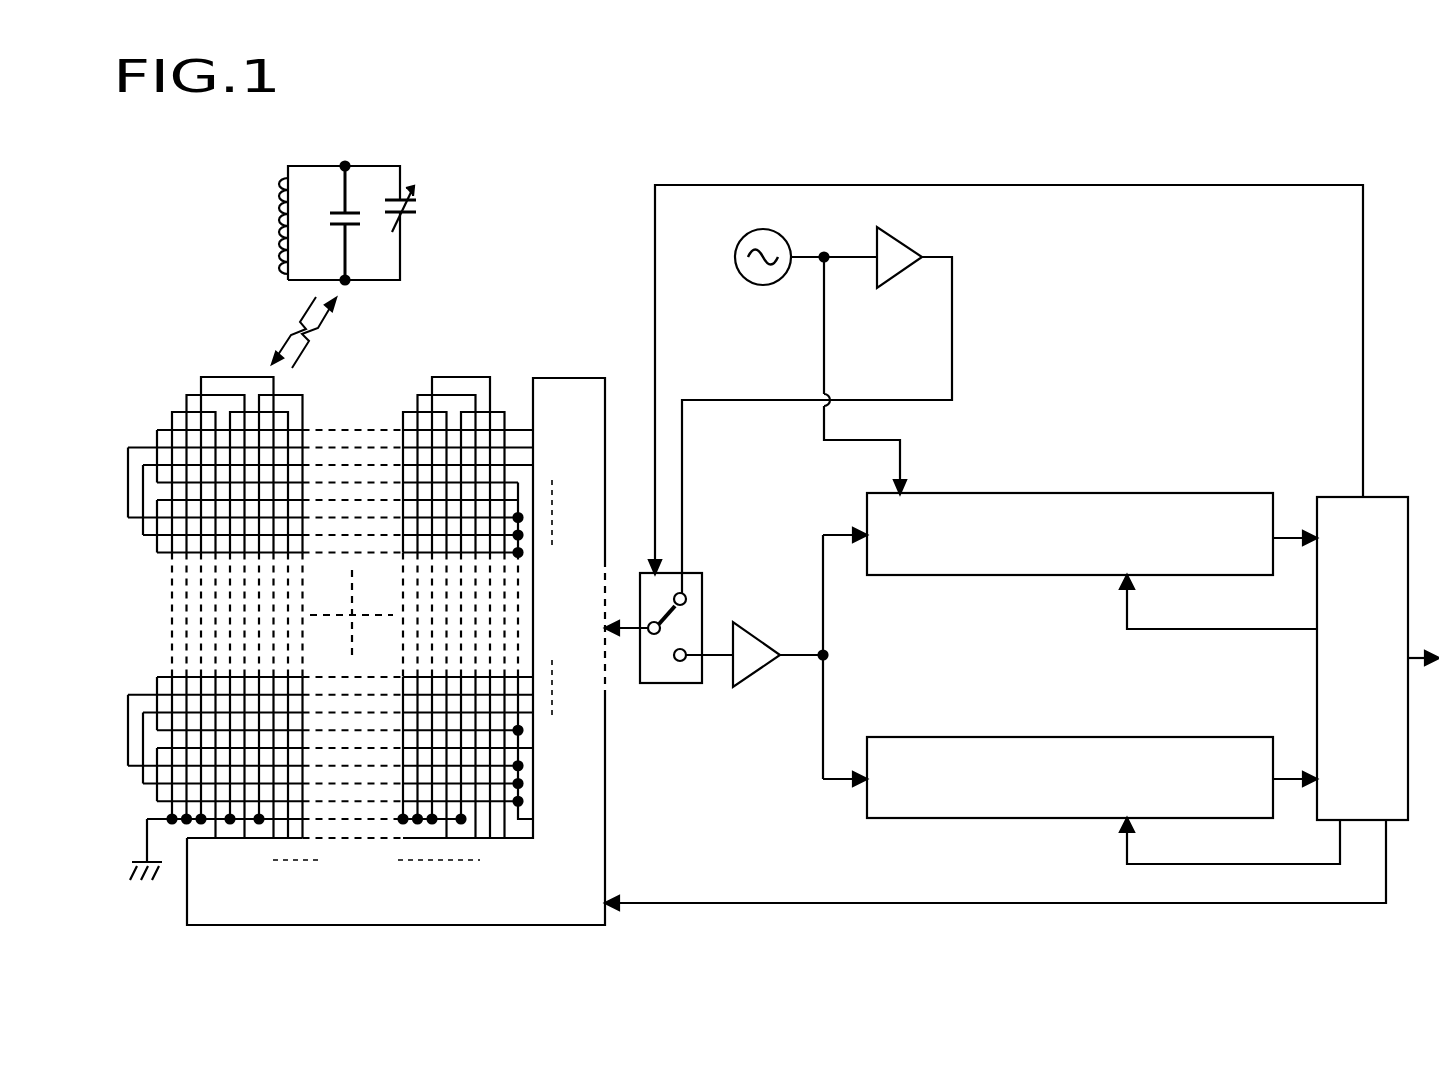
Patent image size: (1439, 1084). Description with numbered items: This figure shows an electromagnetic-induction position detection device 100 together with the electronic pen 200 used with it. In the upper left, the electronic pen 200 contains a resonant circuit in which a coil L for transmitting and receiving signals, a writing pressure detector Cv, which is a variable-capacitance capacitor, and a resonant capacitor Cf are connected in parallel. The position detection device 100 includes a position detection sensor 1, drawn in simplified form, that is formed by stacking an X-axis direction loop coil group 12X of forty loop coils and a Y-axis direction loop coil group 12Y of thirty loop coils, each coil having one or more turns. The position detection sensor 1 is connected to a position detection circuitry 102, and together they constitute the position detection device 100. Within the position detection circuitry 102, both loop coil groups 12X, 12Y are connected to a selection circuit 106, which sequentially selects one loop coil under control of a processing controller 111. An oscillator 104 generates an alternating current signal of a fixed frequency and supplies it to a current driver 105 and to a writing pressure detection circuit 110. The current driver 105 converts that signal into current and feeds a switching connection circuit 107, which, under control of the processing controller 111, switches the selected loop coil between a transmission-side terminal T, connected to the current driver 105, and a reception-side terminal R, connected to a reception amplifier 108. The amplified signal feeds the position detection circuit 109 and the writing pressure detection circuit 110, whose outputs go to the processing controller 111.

The electronic pen 200 is at (203, 170).
The coil L is at (282, 218).
The resonant capacitor Cf is at (332, 205).
The writing pressure detector Cv is at (409, 226).
The position detection device 100 is at (834, 943).
The position detection sensor 1 is at (156, 390).
The X-axis direction loop coil group 12X is at (446, 378).
The Y-axis direction loop coil group 12Y is at (128, 712).
The selection circuit 106 is at (553, 378).
The position detection circuitry 102 is at (1066, 356).
The oscillator 104 is at (762, 300).
The current driver 105 is at (902, 296).
The switching connection circuit 107 is at (654, 692).
The transmission-side terminal T is at (688, 592).
The reception-side terminal R is at (682, 672).
The reception amplifier 108 is at (753, 694).
The position detection circuit 109 is at (1020, 737).
The writing pressure detection circuit 110 is at (1086, 494).
The processing controller 111 is at (1403, 494).